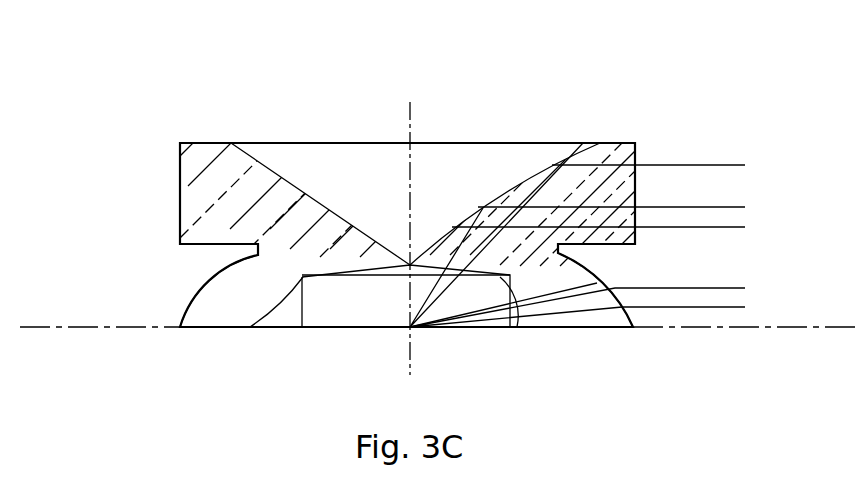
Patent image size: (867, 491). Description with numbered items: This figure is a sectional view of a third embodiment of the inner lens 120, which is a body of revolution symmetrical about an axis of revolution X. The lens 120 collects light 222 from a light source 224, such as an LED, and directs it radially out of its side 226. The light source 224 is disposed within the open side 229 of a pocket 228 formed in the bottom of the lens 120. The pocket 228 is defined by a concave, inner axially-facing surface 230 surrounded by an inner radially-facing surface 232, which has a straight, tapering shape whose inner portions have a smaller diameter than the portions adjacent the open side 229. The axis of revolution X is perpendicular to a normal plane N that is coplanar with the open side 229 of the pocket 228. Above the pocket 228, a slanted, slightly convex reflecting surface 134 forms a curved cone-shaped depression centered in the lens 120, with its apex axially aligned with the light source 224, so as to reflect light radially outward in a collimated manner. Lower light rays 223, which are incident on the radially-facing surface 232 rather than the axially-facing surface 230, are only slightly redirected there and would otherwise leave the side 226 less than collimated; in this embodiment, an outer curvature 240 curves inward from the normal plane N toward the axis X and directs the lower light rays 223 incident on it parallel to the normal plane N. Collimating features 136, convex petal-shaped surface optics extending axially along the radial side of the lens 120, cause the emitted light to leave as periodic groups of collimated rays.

The inner lens 120 is at (150, 88).
The collimating features 136 is at (181, 222).
The reflecting surface 134 is at (300, 187).
The light 222 is at (718, 165).
The side 226 is at (637, 199).
The outer curvature 240 is at (597, 283).
The lower light rays 223 is at (735, 305).
The radially-facing surface 232 is at (235, 328).
The pocket 228 is at (302, 328).
The open side 229 is at (333, 328).
The axially-facing surface 230 is at (382, 273).
The light source 224 is at (413, 329).
The axis of revolution X is at (410, 130).
The normal plane N is at (752, 328).